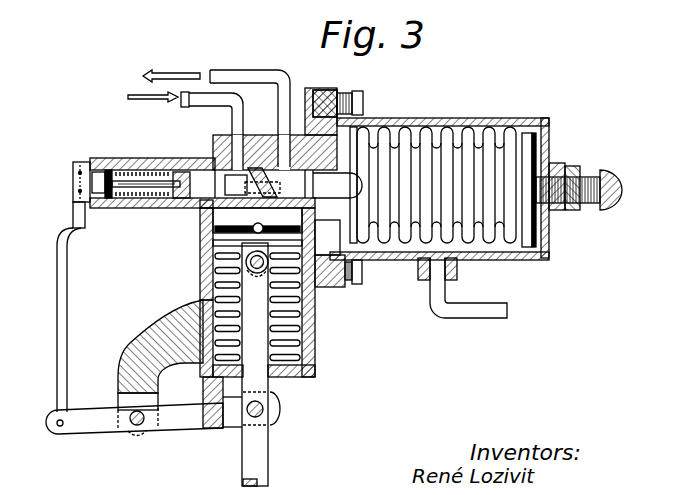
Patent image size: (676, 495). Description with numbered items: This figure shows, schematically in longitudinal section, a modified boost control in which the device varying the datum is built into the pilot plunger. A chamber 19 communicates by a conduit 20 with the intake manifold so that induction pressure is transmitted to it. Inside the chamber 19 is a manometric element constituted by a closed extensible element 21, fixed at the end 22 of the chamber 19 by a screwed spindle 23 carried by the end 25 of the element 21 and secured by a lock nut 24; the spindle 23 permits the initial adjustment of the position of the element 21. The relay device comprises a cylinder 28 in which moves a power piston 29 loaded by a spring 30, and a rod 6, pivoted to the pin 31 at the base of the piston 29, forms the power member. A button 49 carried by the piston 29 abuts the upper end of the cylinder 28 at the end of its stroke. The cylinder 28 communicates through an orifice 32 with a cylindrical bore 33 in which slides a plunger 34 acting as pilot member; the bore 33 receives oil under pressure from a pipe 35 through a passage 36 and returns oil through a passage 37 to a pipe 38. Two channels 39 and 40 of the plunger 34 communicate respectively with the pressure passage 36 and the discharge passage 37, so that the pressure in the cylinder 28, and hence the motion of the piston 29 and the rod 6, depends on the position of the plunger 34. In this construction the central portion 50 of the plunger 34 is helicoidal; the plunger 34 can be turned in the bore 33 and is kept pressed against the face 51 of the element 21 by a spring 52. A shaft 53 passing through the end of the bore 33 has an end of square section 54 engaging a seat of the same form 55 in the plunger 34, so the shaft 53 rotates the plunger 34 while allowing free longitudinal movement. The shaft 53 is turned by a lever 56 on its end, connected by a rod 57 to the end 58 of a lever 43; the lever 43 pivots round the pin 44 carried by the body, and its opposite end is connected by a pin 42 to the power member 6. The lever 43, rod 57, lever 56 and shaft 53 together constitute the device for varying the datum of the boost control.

The rod 6 is at (259, 385).
The chamber 19 is at (518, 250).
The conduit 20 is at (481, 313).
The closed extensible element 21 is at (488, 227).
The end of the chamber 22 is at (551, 166).
The screwed spindle 23 is at (578, 178).
The lock nut 24 is at (574, 212).
The end of the element 25 is at (533, 230).
The cylinder 28 is at (363, 253).
The power piston 29 is at (230, 273).
The spring 30 is at (203, 290).
The pin 31 is at (313, 300).
The orifice 32 is at (283, 197).
The cylindrical bore 33 is at (293, 204).
The plunger 34 is at (342, 186).
The pipe 35 is at (185, 131).
The passage 36 is at (243, 166).
The passage 37 is at (345, 116).
The pipe 38 is at (225, 74).
The channel 39 is at (200, 212).
The channel 40 is at (270, 178).
The pin 42 is at (259, 412).
The lever 43 is at (106, 426).
The pin 44 is at (141, 428).
The button 49 is at (210, 250).
The central portion 50 is at (203, 230).
The face of the element 51 is at (362, 245).
The spring 52 is at (125, 165).
The shaft 53 is at (90, 160).
The end of square section 54 is at (146, 165).
The seat 55 is at (179, 163).
The lever 56 is at (77, 197).
The rod 57 is at (63, 300).
The end of the lever 58 is at (60, 426).